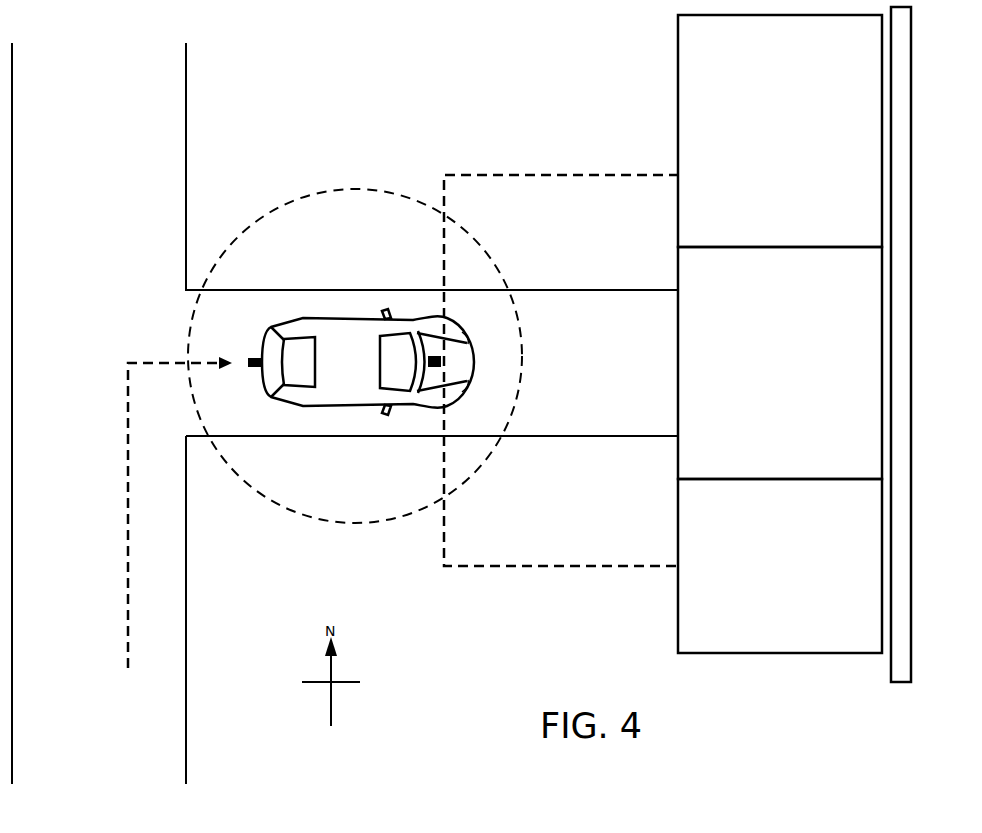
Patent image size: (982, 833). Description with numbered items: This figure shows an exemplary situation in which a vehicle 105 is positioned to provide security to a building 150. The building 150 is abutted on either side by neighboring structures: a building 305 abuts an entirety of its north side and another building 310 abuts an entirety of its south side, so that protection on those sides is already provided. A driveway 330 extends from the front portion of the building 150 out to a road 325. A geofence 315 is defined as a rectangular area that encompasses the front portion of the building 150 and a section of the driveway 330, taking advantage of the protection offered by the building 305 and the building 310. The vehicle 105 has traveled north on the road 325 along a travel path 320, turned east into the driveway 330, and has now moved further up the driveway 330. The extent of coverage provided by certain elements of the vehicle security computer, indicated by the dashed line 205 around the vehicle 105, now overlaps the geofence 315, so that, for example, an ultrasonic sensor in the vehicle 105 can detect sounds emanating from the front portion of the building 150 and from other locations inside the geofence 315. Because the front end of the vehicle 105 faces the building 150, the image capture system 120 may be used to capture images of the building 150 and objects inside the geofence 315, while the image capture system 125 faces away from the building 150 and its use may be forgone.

The vehicle 105 is at (281, 304).
The image capture system 120 is at (437, 360).
The image capture system 125 is at (259, 356).
The building 150 is at (780, 363).
The dashed line 205 is at (303, 195).
The building 305 is at (780, 131).
The building 310 is at (780, 566).
The geofence 315 is at (573, 174).
The travel path 320 is at (127, 574).
The road 325 is at (187, 638).
The driveway 330 is at (535, 437).